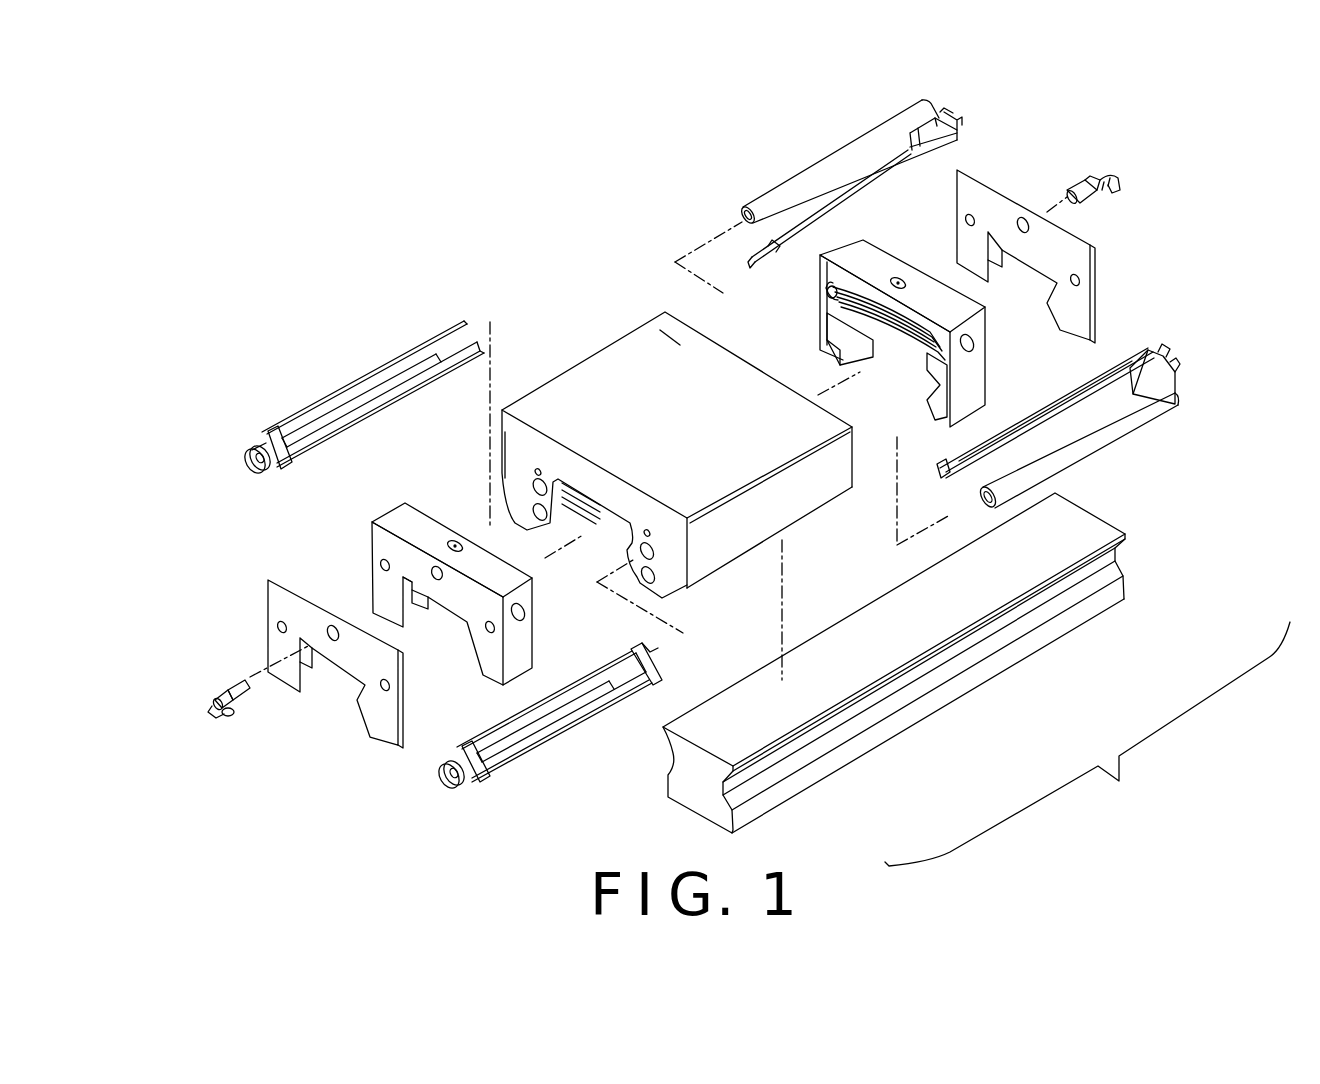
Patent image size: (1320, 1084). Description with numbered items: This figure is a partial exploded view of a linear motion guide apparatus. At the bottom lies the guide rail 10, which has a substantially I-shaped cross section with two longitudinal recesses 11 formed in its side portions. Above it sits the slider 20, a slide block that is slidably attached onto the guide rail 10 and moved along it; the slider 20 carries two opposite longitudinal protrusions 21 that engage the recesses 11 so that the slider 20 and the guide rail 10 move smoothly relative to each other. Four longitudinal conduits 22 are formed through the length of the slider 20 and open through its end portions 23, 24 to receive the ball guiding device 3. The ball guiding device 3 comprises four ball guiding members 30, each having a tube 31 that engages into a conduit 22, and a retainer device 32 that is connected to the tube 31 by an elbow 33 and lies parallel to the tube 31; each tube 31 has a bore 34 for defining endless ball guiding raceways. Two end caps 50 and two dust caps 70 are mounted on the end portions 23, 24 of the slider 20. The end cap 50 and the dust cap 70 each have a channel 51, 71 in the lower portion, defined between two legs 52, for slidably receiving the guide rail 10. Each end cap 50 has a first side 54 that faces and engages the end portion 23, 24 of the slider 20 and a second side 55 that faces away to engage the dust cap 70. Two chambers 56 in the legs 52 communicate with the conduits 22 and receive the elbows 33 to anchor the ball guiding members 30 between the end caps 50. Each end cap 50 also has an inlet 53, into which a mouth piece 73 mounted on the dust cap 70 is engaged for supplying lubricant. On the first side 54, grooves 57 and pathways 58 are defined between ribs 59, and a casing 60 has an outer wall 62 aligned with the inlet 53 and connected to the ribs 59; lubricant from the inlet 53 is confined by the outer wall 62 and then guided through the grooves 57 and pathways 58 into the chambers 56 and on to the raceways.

The ball guiding device 3 is at (907, 94).
The guide rail 10 is at (948, 679).
The longitudinal recesses 11 is at (728, 797).
The slider 20 is at (635, 427).
The longitudinal protrusions 21 is at (550, 338).
The longitudinal conduits 22 is at (658, 566).
The end portion 23 is at (505, 432).
The end portion 24 is at (680, 345).
The ball guiding member 30 is at (330, 395).
The tube 31 is at (1100, 440).
The retainer device 32 is at (1083, 393).
The elbow 33 is at (1157, 357).
The bore 34 is at (738, 214).
The end cap 50 is at (413, 596).
The channel 51 is at (462, 620).
The legs 52 is at (375, 580).
The inlet 53 is at (437, 582).
The first side 54 is at (947, 415).
The second side 55 is at (404, 537).
The chambers 56 is at (847, 323).
The grooves 57 is at (817, 317).
The pathways 58 is at (952, 307).
The ribs 59 is at (840, 292).
The casing 60 is at (826, 321).
The outer wall 62 is at (897, 337).
The dust cap 70 is at (283, 683).
The channel 71 is at (338, 683).
The mouth piece 73 is at (212, 700).